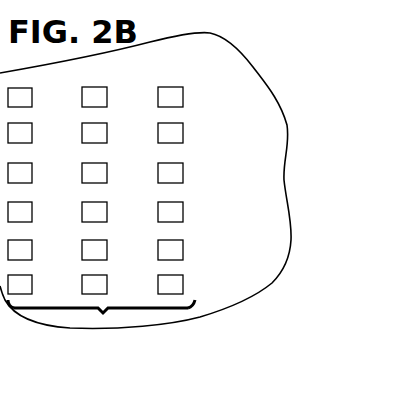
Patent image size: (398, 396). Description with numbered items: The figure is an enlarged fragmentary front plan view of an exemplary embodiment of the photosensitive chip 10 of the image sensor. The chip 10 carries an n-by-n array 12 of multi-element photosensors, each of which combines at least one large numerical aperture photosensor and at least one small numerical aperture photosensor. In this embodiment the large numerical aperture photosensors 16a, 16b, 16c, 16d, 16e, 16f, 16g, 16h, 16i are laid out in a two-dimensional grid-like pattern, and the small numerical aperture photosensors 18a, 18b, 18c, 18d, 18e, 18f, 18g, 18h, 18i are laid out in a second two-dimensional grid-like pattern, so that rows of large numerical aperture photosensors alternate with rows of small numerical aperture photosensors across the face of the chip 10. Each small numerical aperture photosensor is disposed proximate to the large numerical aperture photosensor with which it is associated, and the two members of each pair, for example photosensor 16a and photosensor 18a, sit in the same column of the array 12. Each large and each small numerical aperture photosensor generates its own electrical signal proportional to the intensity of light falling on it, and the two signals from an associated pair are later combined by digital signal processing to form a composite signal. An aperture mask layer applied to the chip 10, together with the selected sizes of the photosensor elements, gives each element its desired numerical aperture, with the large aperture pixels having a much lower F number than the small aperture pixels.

The photosensitive chip 10 is at (293, 180).
The array of multi-element photosensors 12 is at (103, 313).
The large numerical aperture photosensor 16a is at (32, 98).
The large numerical aperture photosensor 16b is at (125, 84).
The large numerical aperture photosensor 16c is at (190, 74).
The large numerical aperture photosensor 16d is at (40, 165).
The large numerical aperture photosensor 16e is at (113, 165).
The large numerical aperture photosensor 16f is at (190, 165).
The large numerical aperture photosensor 16g is at (39, 242).
The large numerical aperture photosensor 16h is at (113, 241).
The large numerical aperture photosensor 16i is at (192, 241).
The small numerical aperture photosensor 18a is at (32, 131).
The small numerical aperture photosensor 18b is at (114, 125).
The small numerical aperture photosensor 18c is at (190, 125).
The small numerical aperture photosensor 18d is at (40, 203).
The small numerical aperture photosensor 18e is at (113, 203).
The small numerical aperture photosensor 18f is at (192, 202).
The small numerical aperture photosensor 18g is at (39, 277).
The small numerical aperture photosensor 18h is at (113, 276).
The small numerical aperture photosensor 18i is at (192, 276).